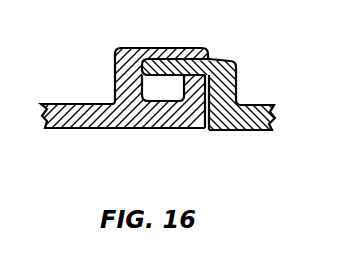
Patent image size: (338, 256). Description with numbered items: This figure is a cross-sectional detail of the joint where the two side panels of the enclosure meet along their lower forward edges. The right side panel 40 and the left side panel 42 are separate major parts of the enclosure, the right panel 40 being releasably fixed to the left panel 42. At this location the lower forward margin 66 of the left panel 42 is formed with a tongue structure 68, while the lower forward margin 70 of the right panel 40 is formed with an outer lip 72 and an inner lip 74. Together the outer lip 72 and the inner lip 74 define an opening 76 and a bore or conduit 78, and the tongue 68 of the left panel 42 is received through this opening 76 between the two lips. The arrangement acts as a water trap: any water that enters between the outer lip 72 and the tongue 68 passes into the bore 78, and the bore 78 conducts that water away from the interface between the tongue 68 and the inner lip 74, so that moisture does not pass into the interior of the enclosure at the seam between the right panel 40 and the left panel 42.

The right side panel 40 is at (61, 103).
The left side panel 42 is at (259, 104).
The lower forward margin 66 is at (233, 60).
The tongue structure 68 is at (175, 59).
The lower forward margin 70 is at (115, 60).
The outer lip 72 is at (133, 48).
The inner lip 74 is at (203, 130).
The opening 76 is at (211, 60).
The bore 78 is at (153, 90).